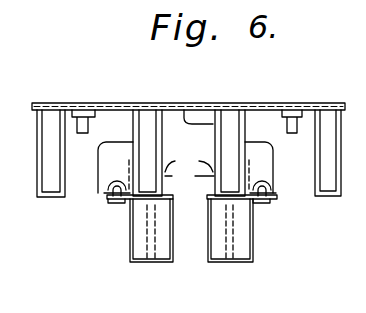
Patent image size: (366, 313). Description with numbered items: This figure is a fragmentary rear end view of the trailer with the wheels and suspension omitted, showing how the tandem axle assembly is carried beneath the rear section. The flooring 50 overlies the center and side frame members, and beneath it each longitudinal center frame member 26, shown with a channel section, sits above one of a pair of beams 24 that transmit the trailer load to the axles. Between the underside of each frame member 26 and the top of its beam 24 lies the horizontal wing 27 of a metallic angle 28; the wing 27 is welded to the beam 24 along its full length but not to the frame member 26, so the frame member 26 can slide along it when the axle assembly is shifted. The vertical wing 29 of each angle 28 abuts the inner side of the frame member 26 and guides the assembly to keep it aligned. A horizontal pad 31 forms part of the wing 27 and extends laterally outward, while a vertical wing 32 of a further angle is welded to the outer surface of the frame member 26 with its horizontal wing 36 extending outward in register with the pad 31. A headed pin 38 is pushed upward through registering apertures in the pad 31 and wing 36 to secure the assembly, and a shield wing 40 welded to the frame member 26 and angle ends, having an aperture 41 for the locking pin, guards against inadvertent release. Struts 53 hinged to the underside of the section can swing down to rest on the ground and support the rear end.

The beam 24 is at (130, 241).
The longitudinal center frame member 26 is at (185, 103).
The horizontal wing 27 is at (145, 192).
The metallic angle 28 is at (189, 158).
The vertical wing 29 is at (189, 176).
The horizontal pad 31 is at (107, 197).
The vertical wing 32 is at (103, 148).
The horizontal wing 36 is at (105, 189).
The headed pin 38 is at (116, 204).
The shield wing 40 is at (103, 161).
The aperture 41 is at (282, 169).
The flooring 50 is at (251, 102).
The strut 53 is at (187, 124).